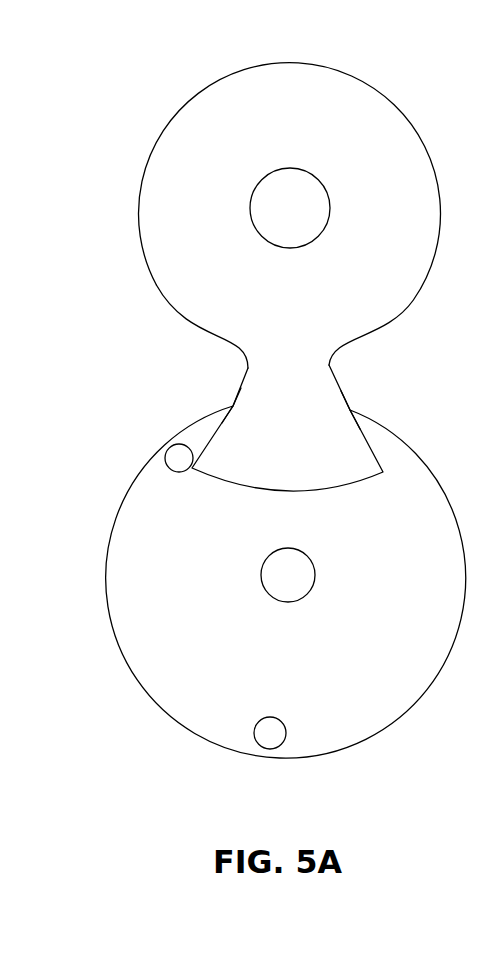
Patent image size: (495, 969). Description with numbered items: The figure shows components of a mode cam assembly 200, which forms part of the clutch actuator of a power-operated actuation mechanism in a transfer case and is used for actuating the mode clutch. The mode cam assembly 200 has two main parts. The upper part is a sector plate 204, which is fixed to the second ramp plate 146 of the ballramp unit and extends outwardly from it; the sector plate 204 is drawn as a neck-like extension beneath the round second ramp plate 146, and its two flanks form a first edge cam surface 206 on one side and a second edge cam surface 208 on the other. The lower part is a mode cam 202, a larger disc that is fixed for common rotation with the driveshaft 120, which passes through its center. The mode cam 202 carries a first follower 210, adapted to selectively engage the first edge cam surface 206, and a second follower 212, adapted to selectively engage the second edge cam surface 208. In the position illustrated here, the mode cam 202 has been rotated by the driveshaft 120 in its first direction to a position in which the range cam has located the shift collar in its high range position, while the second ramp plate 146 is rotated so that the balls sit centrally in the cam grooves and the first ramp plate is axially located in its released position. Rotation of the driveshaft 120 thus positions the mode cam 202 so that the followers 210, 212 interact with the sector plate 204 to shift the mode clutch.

The driveshaft 120 is at (302, 566).
The second ramp plate 146 is at (195, 118).
The mode cam assembly 200 is at (181, 344).
The mode cam 202 is at (375, 698).
The sector plate 204 is at (313, 382).
The first edge cam surface 206 is at (233, 406).
The second edge cam surface 208 is at (352, 411).
The first follower 210 is at (181, 452).
The second follower 212 is at (275, 731).